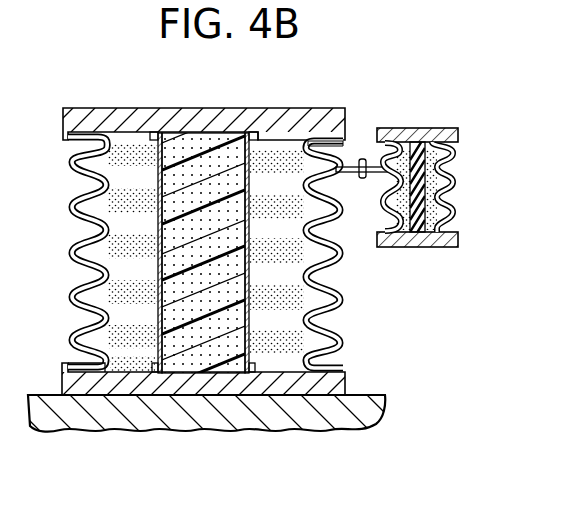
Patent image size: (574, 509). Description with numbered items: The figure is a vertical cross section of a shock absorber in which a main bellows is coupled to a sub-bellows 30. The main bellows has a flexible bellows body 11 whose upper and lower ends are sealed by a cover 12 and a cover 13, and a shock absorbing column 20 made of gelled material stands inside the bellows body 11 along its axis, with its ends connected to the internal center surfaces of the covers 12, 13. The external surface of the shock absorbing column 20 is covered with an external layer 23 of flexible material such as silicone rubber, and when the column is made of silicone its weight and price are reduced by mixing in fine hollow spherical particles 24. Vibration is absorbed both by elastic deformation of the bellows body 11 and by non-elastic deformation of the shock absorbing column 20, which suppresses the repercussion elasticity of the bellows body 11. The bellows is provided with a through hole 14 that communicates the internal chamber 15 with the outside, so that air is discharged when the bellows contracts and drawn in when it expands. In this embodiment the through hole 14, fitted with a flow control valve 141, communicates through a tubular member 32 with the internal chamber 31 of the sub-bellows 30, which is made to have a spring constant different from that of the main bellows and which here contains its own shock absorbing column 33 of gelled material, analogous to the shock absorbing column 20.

The bellows body 11 is at (77, 236).
The cover 12 is at (236, 109).
The cover 13 is at (333, 380).
The through hole 14 is at (301, 160).
The flow control valve 141 is at (359, 157).
The internal chamber 15 is at (322, 312).
The shock absorbing column 20 is at (173, 362).
The external layer 23 is at (95, 352).
The fine hollow spherical particles 24 is at (222, 363).
The sub-bellows 30 is at (420, 127).
The internal chamber 31 is at (452, 181).
The tubular member 32 is at (374, 181).
The shock absorbing column 33 is at (440, 214).